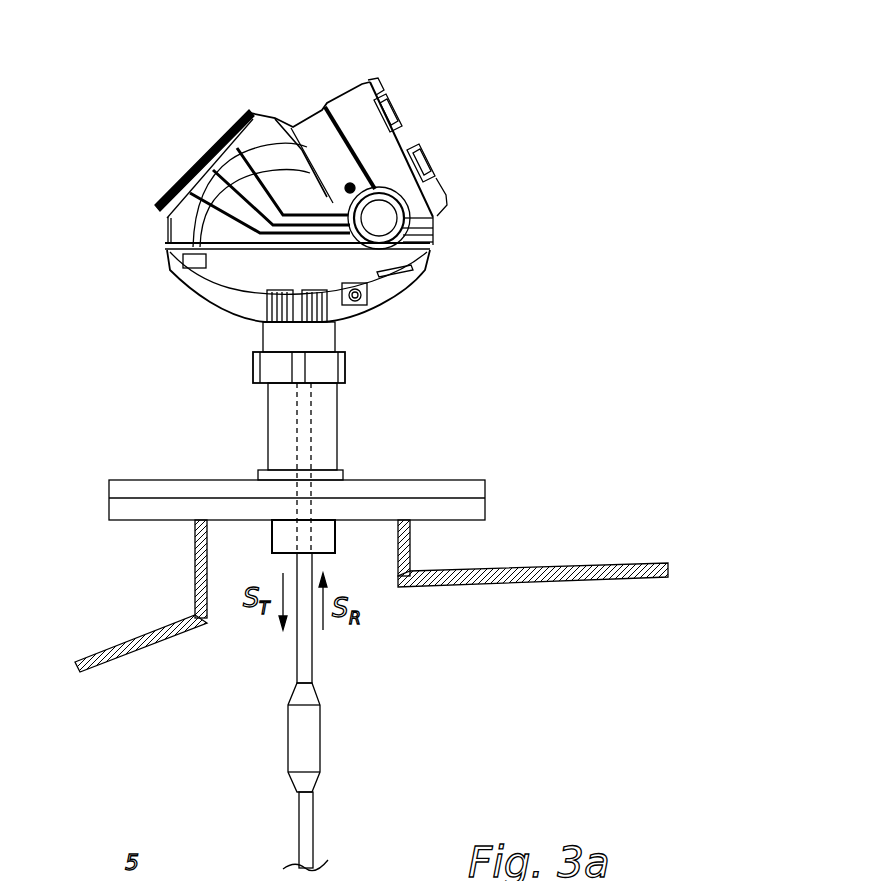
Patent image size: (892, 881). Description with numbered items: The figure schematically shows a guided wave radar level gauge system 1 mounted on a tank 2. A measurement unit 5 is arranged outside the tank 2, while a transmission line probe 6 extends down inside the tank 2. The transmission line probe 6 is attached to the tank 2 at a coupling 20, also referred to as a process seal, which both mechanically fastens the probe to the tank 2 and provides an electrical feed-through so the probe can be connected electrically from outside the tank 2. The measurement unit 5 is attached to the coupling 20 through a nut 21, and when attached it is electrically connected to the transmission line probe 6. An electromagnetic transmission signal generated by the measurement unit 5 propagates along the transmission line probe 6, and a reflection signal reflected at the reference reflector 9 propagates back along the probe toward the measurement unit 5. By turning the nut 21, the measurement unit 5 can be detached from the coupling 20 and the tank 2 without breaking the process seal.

The level gauge system 1 is at (315, 474).
The tank 2 is at (550, 565).
The measurement unit 5 is at (168, 231).
The transmission line probe 6 is at (312, 645).
The reference reflector 9 is at (322, 750).
The coupling 20 is at (352, 435).
The nut 21 is at (345, 370).